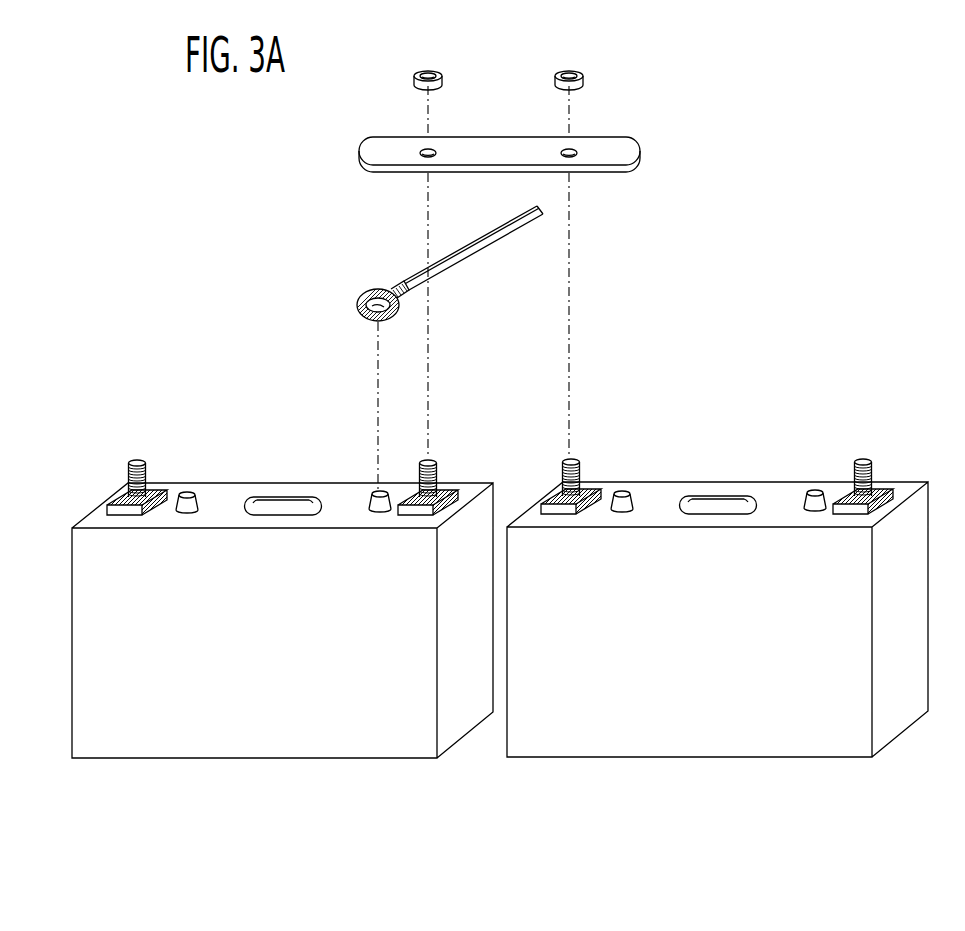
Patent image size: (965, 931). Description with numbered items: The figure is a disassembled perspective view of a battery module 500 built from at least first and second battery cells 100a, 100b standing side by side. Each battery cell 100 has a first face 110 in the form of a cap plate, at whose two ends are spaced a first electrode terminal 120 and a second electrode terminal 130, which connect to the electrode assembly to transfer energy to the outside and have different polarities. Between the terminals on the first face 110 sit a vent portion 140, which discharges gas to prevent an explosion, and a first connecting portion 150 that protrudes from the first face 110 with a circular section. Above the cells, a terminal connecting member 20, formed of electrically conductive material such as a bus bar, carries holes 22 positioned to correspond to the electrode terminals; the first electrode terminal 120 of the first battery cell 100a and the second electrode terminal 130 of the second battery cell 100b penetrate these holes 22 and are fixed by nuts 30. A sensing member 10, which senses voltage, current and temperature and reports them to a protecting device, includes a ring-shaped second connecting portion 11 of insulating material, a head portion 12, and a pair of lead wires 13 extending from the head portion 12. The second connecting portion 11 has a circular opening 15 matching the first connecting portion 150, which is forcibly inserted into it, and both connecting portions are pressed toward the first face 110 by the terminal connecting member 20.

The sensing member 10 is at (416, 257).
The second connecting portion 11 is at (359, 327).
The head portion 12 is at (400, 287).
The lead wires 13 is at (488, 232).
The opening 15 is at (372, 294).
The terminal connecting member 20 is at (486, 128).
The holes 22 is at (562, 152).
The nuts 30 is at (588, 61).
The battery cell 100 is at (722, 838).
The first battery cell 100a is at (250, 766).
The second battery cell 100b is at (702, 765).
The first face 110 is at (355, 495).
The first electrode terminal 120 is at (432, 460).
The second electrode terminal 130 is at (138, 461).
The vent portion 140 is at (283, 500).
The first connecting portion 150 is at (190, 494).
The battery module 500 is at (788, 168).